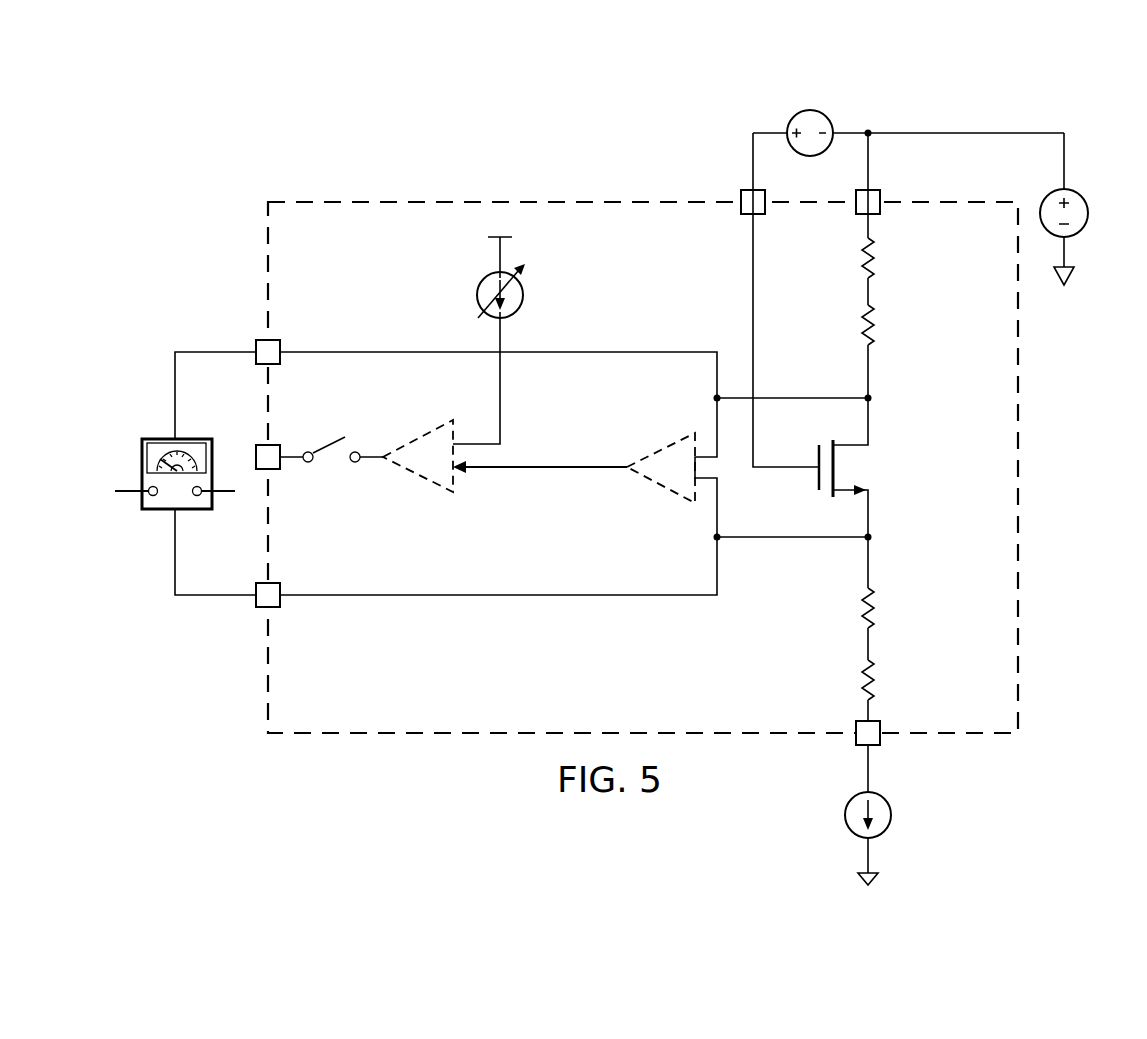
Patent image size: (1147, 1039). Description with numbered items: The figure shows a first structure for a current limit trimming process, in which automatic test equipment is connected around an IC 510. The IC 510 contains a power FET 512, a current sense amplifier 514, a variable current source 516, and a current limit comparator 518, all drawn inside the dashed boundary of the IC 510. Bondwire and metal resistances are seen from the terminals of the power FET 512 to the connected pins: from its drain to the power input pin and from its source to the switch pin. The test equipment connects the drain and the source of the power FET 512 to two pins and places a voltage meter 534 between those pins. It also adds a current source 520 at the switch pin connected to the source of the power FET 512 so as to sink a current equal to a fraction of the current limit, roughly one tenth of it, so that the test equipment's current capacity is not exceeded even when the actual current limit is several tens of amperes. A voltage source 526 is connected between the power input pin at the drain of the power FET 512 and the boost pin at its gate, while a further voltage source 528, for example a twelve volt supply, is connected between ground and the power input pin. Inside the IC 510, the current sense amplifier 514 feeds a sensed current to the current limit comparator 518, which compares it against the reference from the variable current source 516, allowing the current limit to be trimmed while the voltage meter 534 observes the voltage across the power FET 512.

The IC 510 is at (455, 199).
The power FET 512 is at (818, 481).
The current sense amplifier 514 is at (663, 485).
The variable current source 516 is at (477, 296).
The current limit comparator 518 is at (417, 476).
The current source 520 is at (892, 817).
The voltage source 526 is at (818, 110).
The voltage source 528 is at (1082, 194).
The voltage meter 534 is at (152, 438).